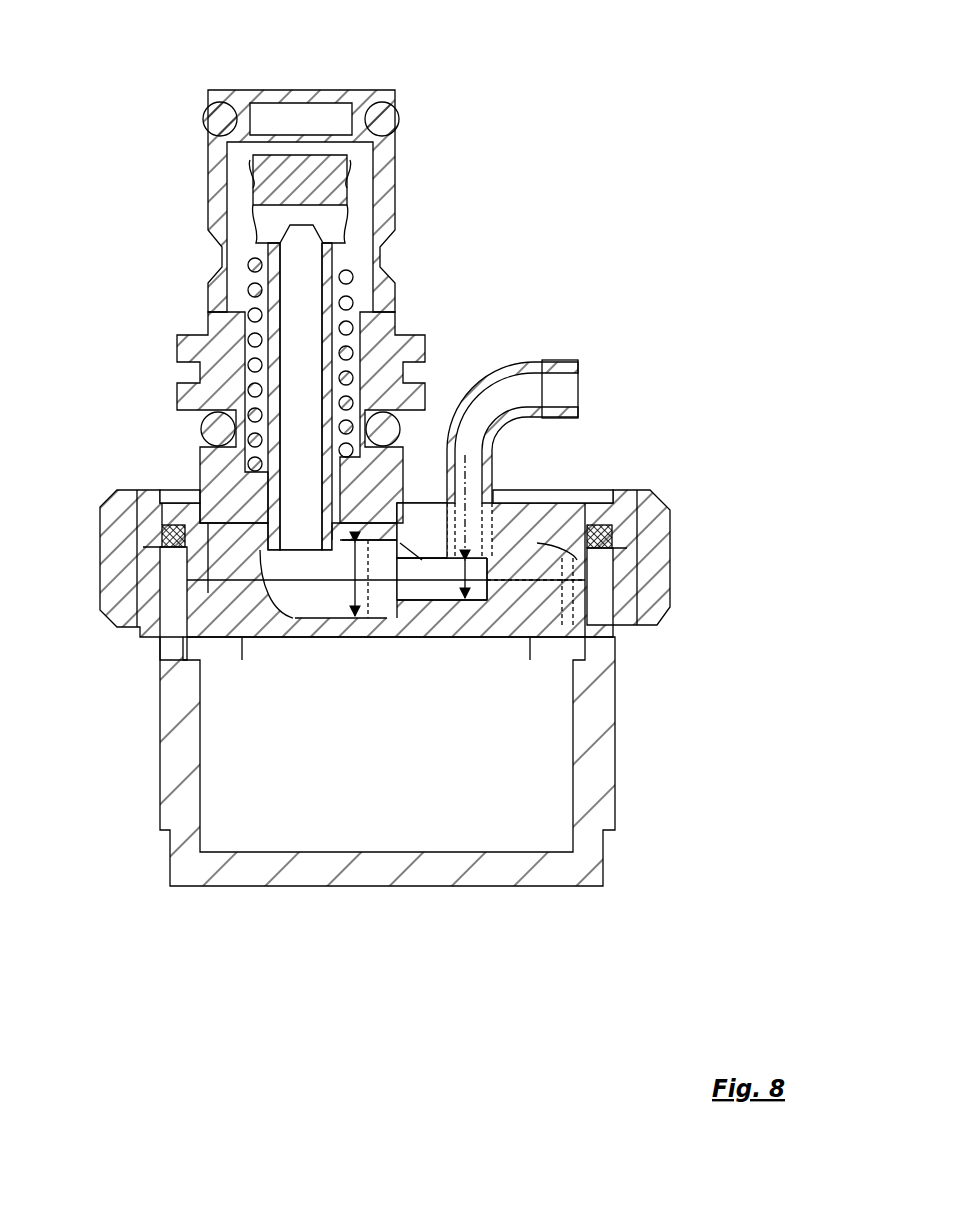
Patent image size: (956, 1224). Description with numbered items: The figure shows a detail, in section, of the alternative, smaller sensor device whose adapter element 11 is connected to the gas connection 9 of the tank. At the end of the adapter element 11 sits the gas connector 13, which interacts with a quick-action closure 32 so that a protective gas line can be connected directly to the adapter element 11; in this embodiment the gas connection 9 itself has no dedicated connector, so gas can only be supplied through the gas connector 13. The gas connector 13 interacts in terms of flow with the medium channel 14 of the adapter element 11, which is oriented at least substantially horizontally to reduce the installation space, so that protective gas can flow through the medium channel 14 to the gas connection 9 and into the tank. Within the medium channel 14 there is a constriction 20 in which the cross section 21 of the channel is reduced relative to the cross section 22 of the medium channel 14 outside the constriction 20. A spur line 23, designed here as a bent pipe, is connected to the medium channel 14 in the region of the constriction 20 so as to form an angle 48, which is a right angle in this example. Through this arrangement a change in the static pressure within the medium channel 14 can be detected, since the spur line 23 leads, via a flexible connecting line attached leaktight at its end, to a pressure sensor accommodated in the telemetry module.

The gas connection 9 is at (175, 793).
The adapter element 11 is at (566, 489).
The gas connector 13 is at (202, 467).
The medium channel 14 is at (300, 600).
The constriction 20 is at (417, 555).
The cross section 21 is at (470, 595).
The cross section 22 is at (376, 622).
The spur line 23 is at (470, 498).
The quick-action closure 32 is at (363, 95).
The angle 48 is at (512, 577).